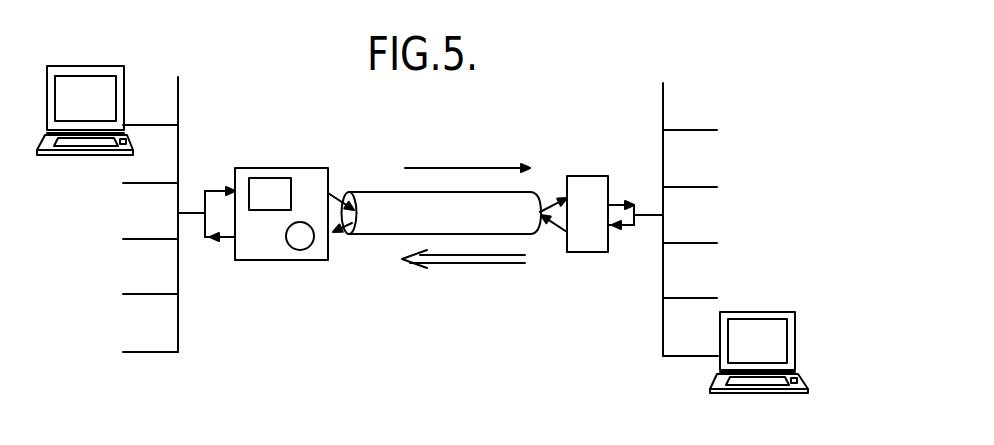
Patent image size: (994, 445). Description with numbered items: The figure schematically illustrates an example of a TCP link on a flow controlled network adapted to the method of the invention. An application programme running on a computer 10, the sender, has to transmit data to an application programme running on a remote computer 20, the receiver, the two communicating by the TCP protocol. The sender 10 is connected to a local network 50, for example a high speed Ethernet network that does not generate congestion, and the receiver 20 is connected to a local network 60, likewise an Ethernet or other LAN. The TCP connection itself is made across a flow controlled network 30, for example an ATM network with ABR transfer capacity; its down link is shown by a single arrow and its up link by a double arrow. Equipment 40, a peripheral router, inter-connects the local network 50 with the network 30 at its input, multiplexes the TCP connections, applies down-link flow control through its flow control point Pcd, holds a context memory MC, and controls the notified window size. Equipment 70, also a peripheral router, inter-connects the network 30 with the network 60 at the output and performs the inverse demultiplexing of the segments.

The computer (sender) 10 is at (90, 63).
The remote computer (receiver) 20 is at (779, 304).
The flow controlled network 30 is at (377, 200).
The inter-connection equipment (peripheral router) 40 is at (262, 260).
The local network 50 is at (178, 337).
The local network 60 is at (663, 330).
The inter-connection equipment (peripheral router) 70 is at (592, 176).
The flow control point Pcd is at (303, 250).